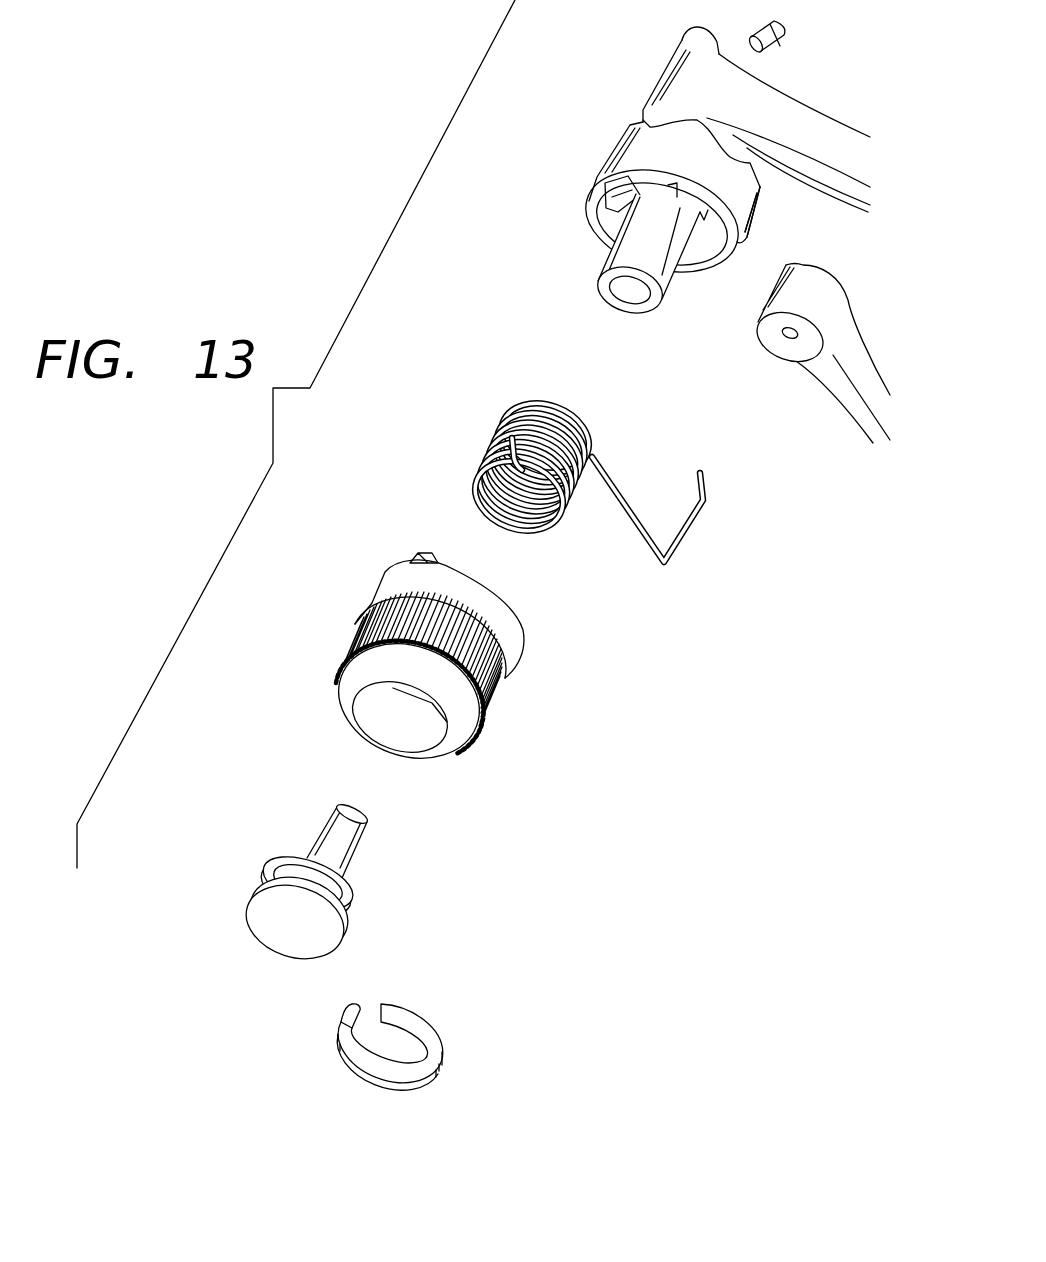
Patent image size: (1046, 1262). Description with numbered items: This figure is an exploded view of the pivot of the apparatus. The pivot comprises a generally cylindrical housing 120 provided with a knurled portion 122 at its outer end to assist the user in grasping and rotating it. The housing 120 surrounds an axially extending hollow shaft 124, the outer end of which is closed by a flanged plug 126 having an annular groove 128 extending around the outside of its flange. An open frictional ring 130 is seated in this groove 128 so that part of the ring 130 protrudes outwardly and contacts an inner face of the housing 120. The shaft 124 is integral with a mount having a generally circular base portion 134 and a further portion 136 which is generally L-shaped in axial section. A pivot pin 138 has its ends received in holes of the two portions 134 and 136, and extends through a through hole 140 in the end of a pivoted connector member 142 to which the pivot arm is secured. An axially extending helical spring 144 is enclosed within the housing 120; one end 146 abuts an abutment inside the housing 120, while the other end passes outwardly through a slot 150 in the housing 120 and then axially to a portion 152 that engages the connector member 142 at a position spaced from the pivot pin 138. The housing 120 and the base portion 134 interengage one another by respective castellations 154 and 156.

The cylindrical housing 120 is at (388, 587).
The knurled portion 122 is at (497, 693).
The hollow shaft 124 is at (598, 257).
The flanged plug 126 is at (322, 890).
The annular groove 128 is at (265, 876).
The open frictional ring 130 is at (425, 1030).
The base portion 134 is at (763, 205).
The further portion 136 is at (681, 34).
The pivot pin 138 is at (780, 40).
The through hole 140 is at (783, 335).
The pivoted connector member 142 is at (833, 390).
The helical spring 144 is at (582, 495).
The spring end 146 is at (512, 445).
The slot 150 is at (712, 243).
The spring end portion 152 is at (683, 88).
The castellations 154 is at (413, 556).
The castellations 156 is at (605, 201).